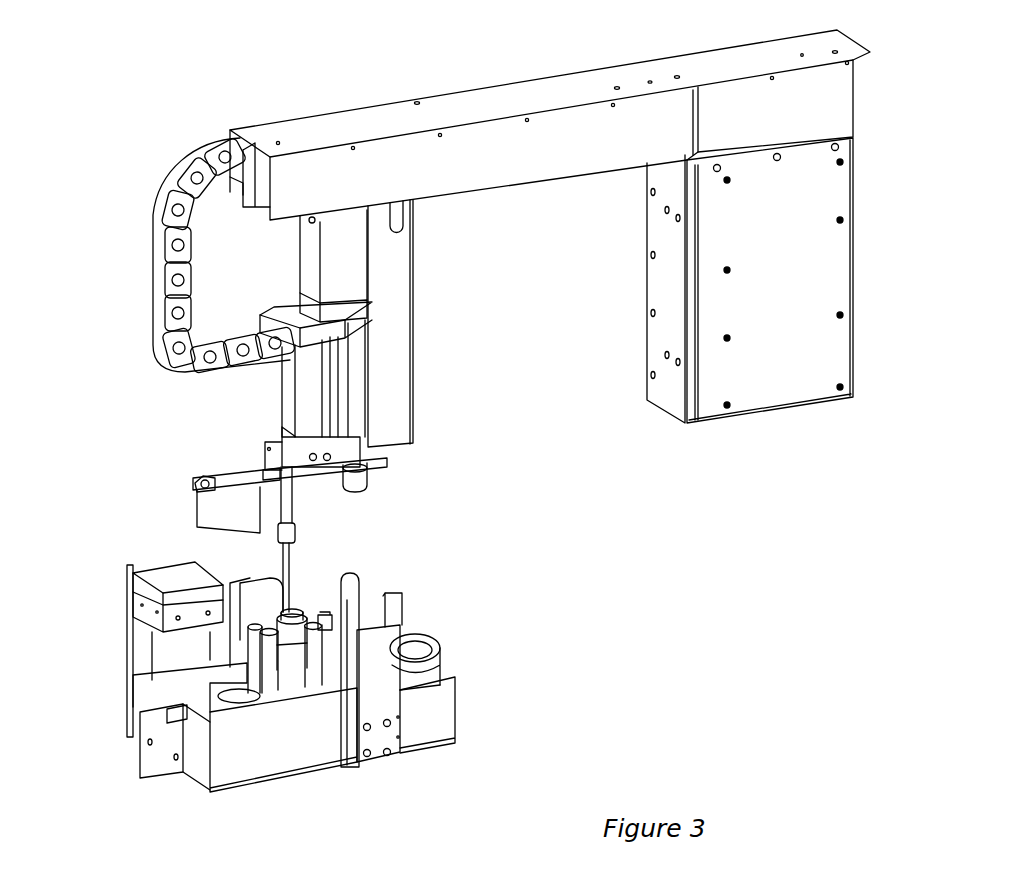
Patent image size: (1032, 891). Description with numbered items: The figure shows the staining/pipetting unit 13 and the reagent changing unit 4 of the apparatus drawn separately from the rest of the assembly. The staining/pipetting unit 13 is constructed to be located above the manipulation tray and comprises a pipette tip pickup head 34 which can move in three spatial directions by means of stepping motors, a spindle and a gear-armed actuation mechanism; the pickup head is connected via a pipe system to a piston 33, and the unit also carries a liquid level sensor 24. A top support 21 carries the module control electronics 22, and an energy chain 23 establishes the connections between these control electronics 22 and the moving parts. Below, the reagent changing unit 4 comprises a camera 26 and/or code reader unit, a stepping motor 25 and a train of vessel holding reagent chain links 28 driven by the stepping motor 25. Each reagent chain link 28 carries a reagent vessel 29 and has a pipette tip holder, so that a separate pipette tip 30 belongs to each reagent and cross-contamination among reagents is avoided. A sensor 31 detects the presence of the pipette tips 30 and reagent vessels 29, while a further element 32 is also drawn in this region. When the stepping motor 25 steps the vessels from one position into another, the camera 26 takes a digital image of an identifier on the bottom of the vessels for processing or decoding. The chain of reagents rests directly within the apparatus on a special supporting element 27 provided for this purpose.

The reagent changing unit 4 is at (272, 655).
The staining/pipetting unit 13 is at (550, 234).
The top support 21 is at (568, 143).
The module control electronics 22 is at (832, 275).
The energy chain 23 is at (152, 190).
The liquid level sensor 24 is at (242, 497).
The stepping motor 25 is at (268, 598).
The camera 26 is at (172, 573).
The supporting element 27 is at (168, 745).
The reagent chain link 28 is at (273, 670).
The reagent vessel 29 is at (298, 670).
The pipette tip 30 is at (287, 551).
The sensor 31 is at (377, 660).
The post 32 is at (395, 597).
The piston 33 is at (358, 465).
The pipette tip pickup head 34 is at (290, 480).